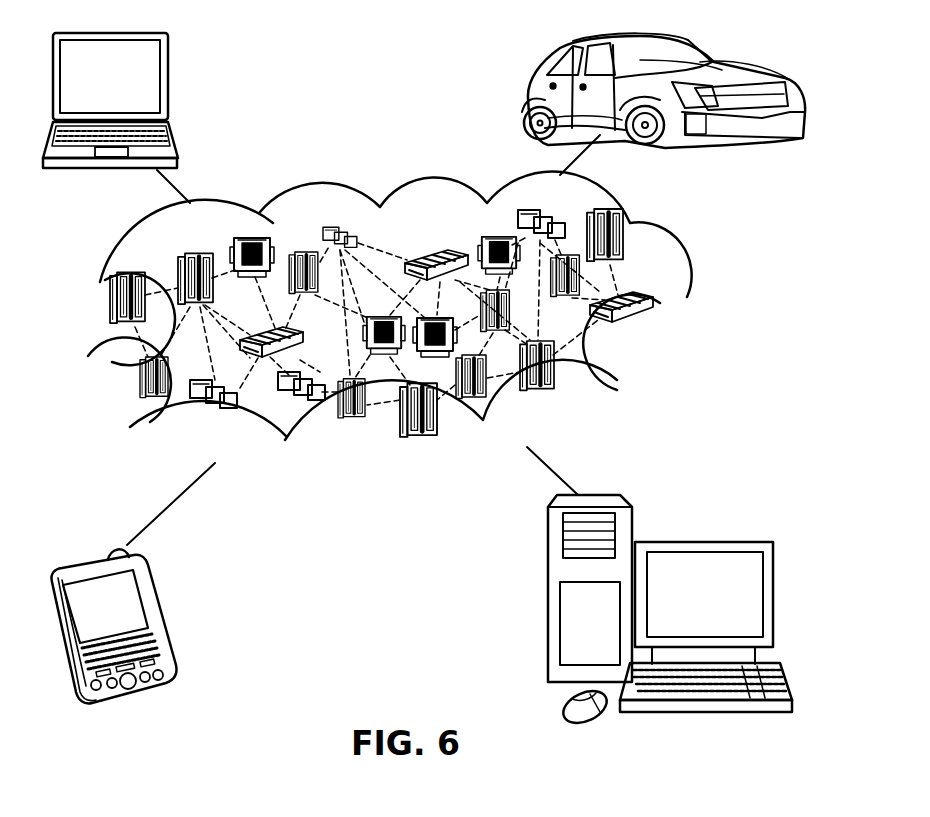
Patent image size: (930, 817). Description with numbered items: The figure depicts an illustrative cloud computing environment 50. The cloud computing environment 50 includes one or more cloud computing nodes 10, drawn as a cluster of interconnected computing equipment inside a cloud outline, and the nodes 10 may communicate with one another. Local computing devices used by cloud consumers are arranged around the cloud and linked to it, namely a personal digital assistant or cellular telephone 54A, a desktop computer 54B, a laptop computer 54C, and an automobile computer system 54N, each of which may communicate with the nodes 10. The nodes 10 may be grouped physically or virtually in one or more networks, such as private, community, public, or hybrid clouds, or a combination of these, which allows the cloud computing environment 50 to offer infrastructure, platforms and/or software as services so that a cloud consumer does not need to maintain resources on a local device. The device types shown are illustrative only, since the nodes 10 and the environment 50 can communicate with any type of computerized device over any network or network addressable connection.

The cloud computing nodes 10 is at (670, 334).
The cloud computing environment 50 is at (704, 304).
The personal digital assistant (PDA) or cellular telephone 54A is at (160, 617).
The desktop computer 54B is at (703, 542).
The laptop computer 54C is at (168, 80).
The automobile computer system 54N is at (526, 97).